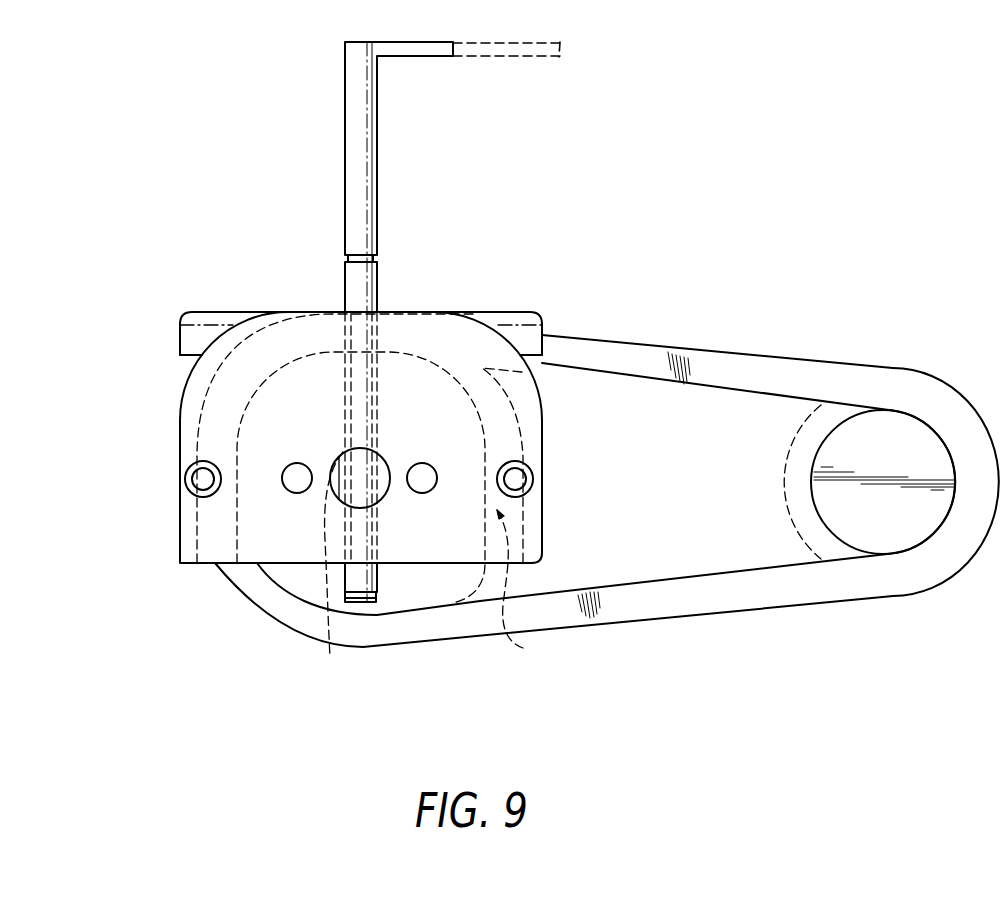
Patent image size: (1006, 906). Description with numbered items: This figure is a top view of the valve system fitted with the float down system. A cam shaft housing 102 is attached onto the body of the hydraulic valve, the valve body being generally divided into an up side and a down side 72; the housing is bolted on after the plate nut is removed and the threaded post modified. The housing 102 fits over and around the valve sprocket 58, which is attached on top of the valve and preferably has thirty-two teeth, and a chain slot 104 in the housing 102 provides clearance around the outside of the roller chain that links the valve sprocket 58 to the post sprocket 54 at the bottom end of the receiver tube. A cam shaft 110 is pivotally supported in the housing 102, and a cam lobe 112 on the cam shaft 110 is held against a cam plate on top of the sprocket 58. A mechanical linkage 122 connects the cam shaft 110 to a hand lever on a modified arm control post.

The post sprocket 54 is at (800, 545).
The valve sprocket 58 is at (642, 603).
The down side 72 is at (530, 313).
The cam shaft housing 102 is at (262, 548).
The chain slot 104 is at (529, 589).
The cam shaft 110 is at (370, 233).
The cam lobe 112 is at (327, 570).
The mechanical linkage 122 is at (508, 50).